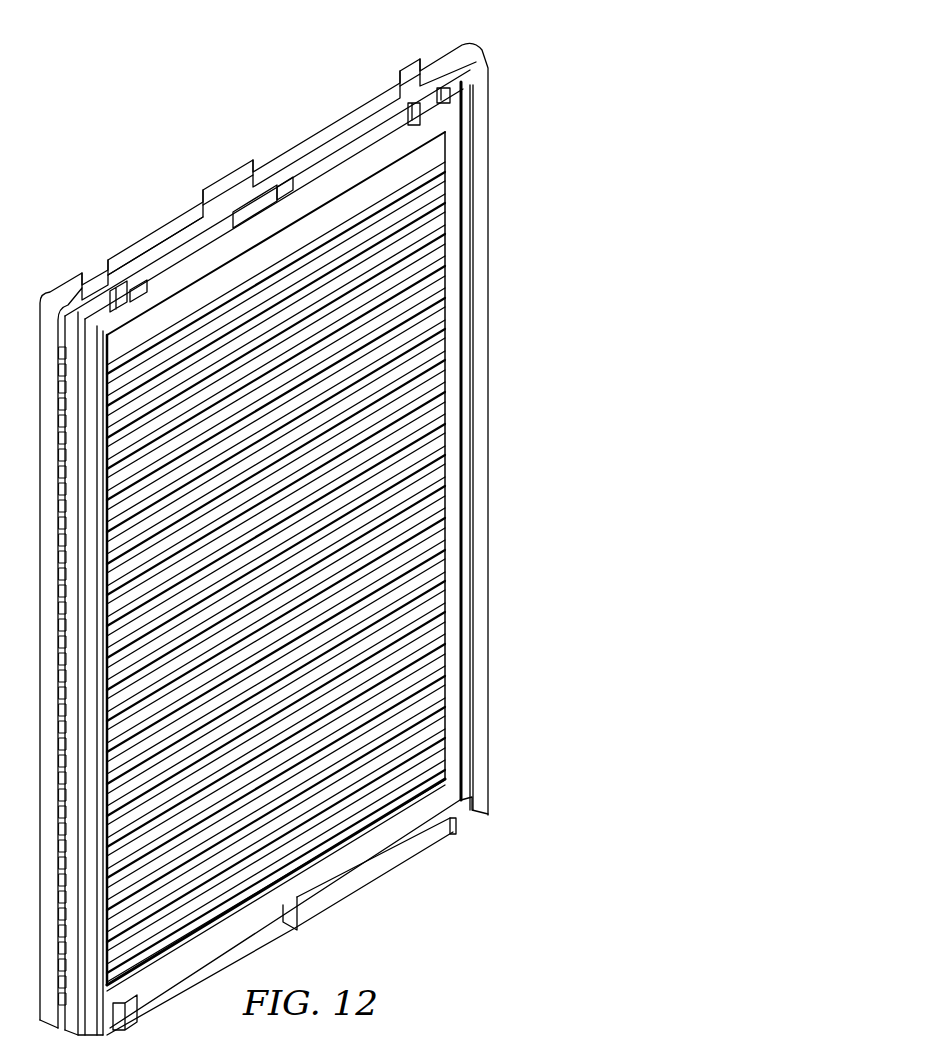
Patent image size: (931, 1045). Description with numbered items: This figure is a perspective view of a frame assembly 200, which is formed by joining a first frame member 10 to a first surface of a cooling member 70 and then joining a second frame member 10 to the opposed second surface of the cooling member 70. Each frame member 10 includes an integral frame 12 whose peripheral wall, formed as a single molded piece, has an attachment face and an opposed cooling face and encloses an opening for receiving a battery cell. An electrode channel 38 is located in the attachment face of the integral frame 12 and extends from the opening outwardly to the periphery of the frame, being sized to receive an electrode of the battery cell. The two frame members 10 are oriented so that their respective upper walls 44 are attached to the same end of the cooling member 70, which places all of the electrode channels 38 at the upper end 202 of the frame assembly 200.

The frame member 10 is at (288, 147).
The integral frame 12 is at (220, 178).
The electrode channel 38 is at (141, 244).
The upper wall 44 is at (397, 117).
The cooling member 70 is at (443, 283).
The frame assembly 200 is at (483, 62).
The upper end 202 is at (155, 250).